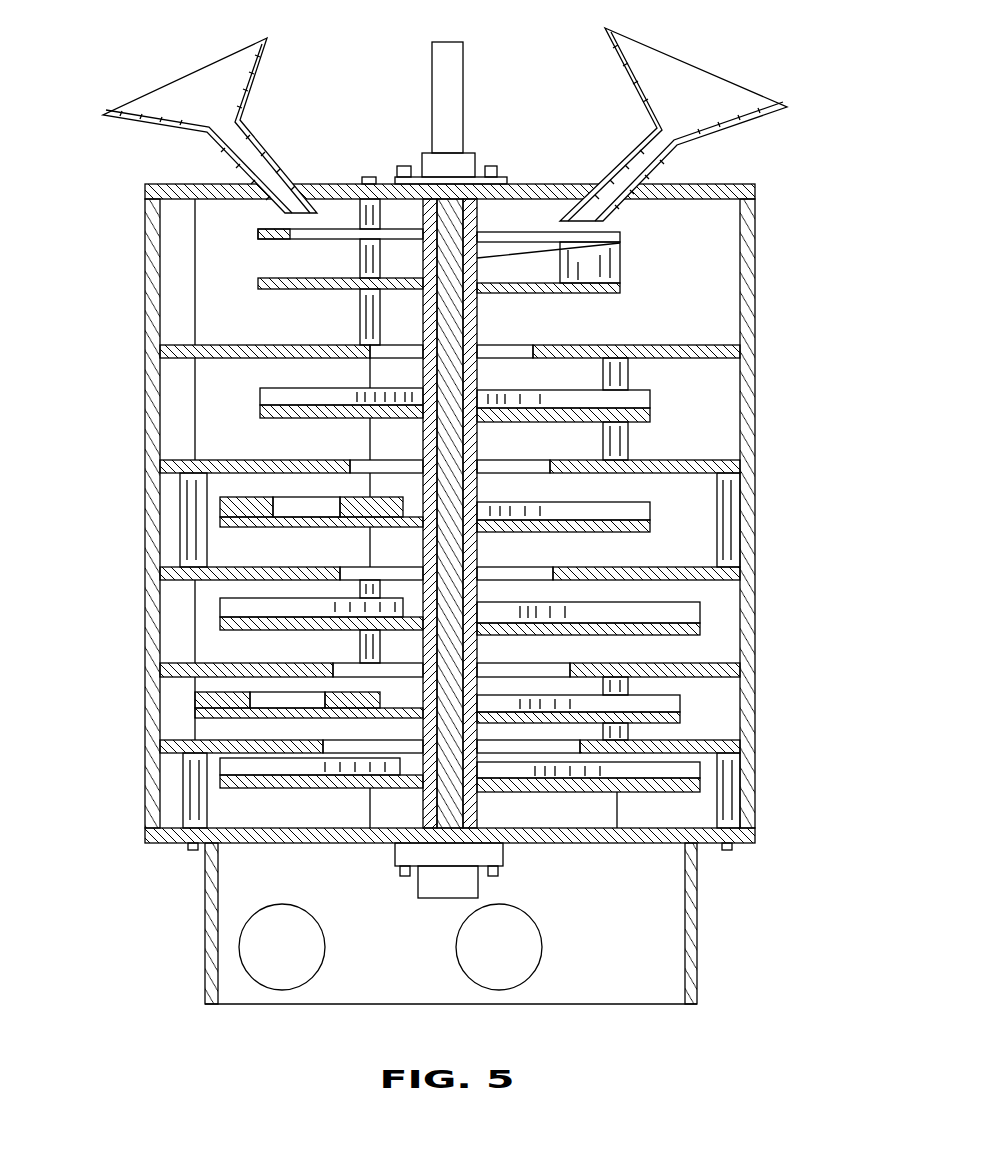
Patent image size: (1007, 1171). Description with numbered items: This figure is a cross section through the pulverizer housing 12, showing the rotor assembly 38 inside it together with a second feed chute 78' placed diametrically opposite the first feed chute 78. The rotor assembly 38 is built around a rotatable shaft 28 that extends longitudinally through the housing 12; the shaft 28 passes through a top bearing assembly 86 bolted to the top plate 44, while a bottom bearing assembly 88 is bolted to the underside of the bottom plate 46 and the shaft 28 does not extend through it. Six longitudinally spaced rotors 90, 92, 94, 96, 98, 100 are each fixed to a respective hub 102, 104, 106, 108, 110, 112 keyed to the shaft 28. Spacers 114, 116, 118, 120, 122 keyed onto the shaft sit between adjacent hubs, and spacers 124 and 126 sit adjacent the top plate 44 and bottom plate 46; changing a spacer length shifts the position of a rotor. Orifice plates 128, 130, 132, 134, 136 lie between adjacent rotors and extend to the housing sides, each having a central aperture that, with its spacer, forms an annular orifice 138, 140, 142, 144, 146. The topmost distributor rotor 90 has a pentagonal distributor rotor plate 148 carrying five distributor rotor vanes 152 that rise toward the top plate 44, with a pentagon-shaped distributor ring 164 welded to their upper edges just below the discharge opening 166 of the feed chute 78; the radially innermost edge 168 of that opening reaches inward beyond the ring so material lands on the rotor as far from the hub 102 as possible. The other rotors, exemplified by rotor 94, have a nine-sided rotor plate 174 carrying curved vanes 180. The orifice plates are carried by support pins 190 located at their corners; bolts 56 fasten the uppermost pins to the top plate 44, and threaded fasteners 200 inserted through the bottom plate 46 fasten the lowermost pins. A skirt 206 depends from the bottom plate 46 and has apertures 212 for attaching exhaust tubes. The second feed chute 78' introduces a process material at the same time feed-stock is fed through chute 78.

The housing 12 is at (143, 322).
The rotatable shaft 28 is at (467, 70).
The rotor assembly 38 is at (222, 372).
The top plate 44 is at (720, 187).
The bottom plate 46 is at (162, 845).
The bolts 56 is at (372, 175).
The feed chute 78 is at (210, 108).
The second feed chute 78' is at (682, 124).
The top bearing assembly 86 is at (420, 160).
The bottom bearing assembly 88 is at (503, 862).
The distributor rotor 90 is at (628, 268).
The rotor 92 is at (657, 393).
The rotor 94 is at (640, 525).
The rotor 96 is at (703, 626).
The rotor 98 is at (677, 718).
The rotor 100 is at (255, 830).
The hub 102 is at (537, 277).
The hub 104 is at (490, 388).
The hub 106 is at (483, 497).
The hub 108 is at (480, 613).
The hub 110 is at (360, 645).
The hub 112 is at (507, 790).
The spacer 114 is at (478, 320).
The spacer 116 is at (420, 440).
The spacer 118 is at (420, 550).
The spacer 120 is at (480, 653).
The spacer 122 is at (373, 803).
The spacer 124 is at (483, 217).
The spacer 126 is at (520, 840).
The orifice plate 128 is at (283, 340).
The orifice plate 130 is at (235, 458).
The orifice plate 132 is at (225, 565).
The orifice plate 134 is at (205, 660).
The orifice plate 136 is at (210, 720).
The annular orifice 138 is at (397, 337).
The annular orifice 140 is at (510, 462).
The annular orifice 142 is at (510, 563).
The annular orifice 144 is at (562, 667).
The annular orifice 146 is at (215, 762).
The distributor rotor plate 148 is at (620, 292).
The distributor rotor vanes 152 is at (373, 255).
The distributor ring 164 is at (280, 243).
The discharge opening 166 is at (283, 217).
The radially innermost edge 168 is at (330, 217).
The rotor plate 174 is at (640, 548).
The curved vanes 180 is at (742, 480).
The support pins 190 is at (185, 508).
The threaded fasteners 200 is at (196, 850).
The skirt 206 is at (697, 955).
The apertures 212 is at (325, 975).